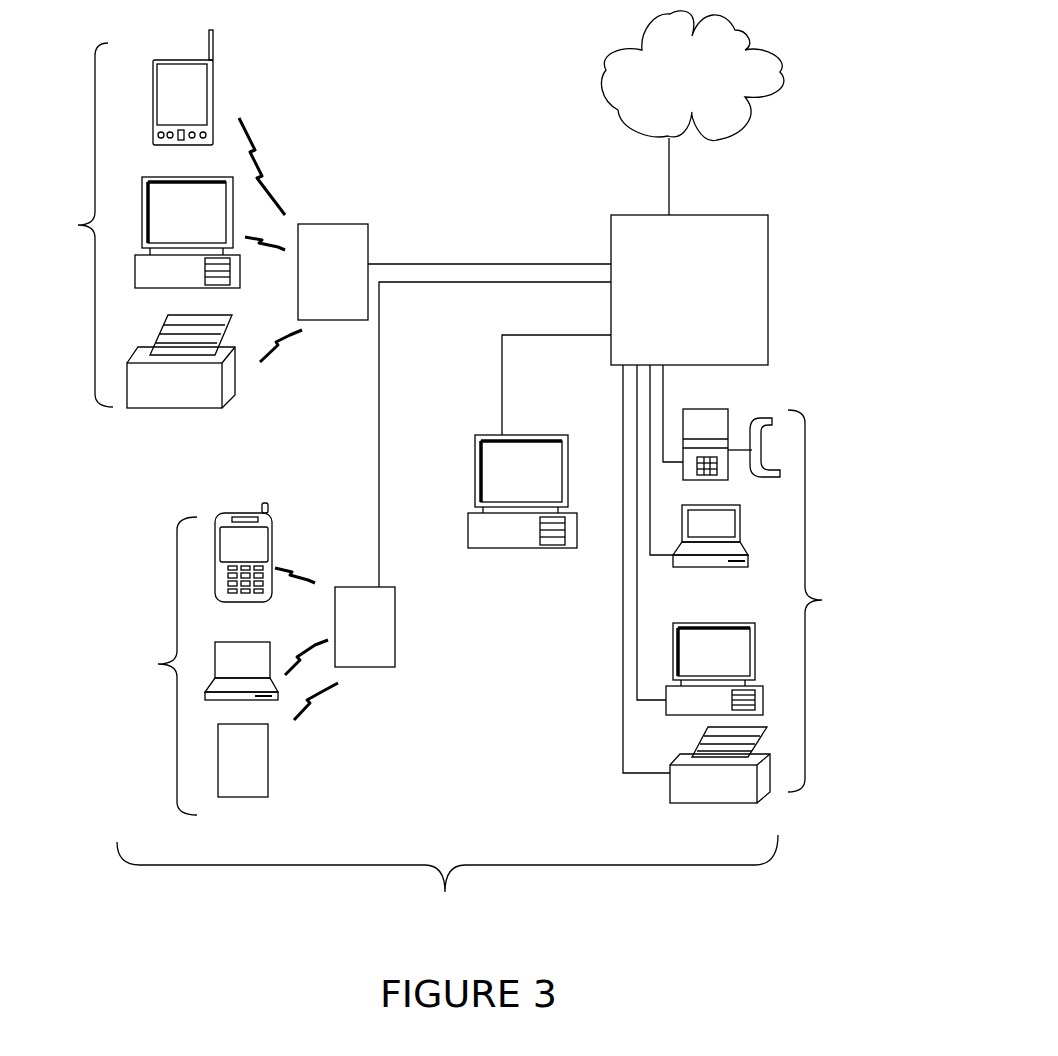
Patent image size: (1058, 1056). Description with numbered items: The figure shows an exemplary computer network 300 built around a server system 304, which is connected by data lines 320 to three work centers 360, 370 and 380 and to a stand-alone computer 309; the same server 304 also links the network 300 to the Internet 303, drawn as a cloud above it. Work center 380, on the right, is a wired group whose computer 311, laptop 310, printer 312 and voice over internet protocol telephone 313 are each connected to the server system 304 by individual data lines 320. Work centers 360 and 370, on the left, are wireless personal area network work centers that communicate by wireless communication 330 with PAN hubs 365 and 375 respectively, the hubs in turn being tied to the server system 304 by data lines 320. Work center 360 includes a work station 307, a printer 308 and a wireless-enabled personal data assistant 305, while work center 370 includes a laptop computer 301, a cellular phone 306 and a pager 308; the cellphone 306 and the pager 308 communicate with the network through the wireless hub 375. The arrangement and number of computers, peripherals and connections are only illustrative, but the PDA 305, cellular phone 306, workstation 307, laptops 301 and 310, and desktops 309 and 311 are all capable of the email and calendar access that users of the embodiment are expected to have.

The network 300 is at (447, 879).
The laptop computer 301 is at (241, 671).
The Internet 303 is at (693, 76).
The server system 304 is at (689, 290).
The wireless-enabled personal data assistant (PDA) 305 is at (183, 87).
The cellular phone 306 is at (243, 552).
The work station 307 is at (187, 232).
The printer / pager 308 is at (197, 556).
The computer 309 is at (522, 491).
The laptop 310 is at (710, 536).
The computer 311 is at (714, 669).
The printer 312 is at (720, 765).
The voice over internet protocol (VoIP) telephone 313 is at (731, 444).
The data lines 320 is at (525, 475).
The wireless communication 330 is at (301, 425).
The work center 360 is at (69, 225).
The PAN hub 365 is at (333, 272).
The work center 370 is at (151, 666).
The PAN hub 375 is at (365, 627).
The work center 380 is at (830, 601).